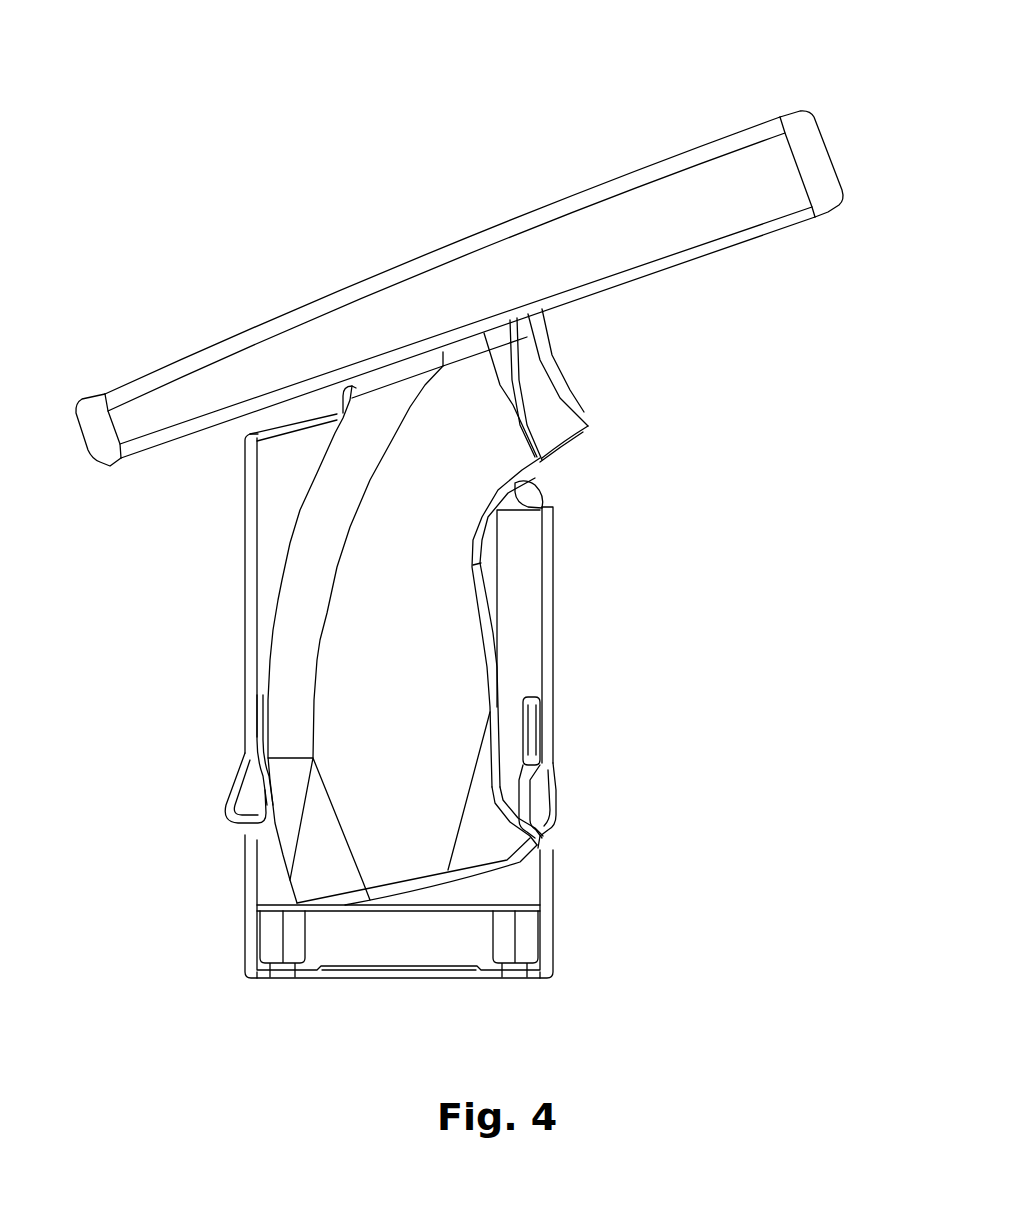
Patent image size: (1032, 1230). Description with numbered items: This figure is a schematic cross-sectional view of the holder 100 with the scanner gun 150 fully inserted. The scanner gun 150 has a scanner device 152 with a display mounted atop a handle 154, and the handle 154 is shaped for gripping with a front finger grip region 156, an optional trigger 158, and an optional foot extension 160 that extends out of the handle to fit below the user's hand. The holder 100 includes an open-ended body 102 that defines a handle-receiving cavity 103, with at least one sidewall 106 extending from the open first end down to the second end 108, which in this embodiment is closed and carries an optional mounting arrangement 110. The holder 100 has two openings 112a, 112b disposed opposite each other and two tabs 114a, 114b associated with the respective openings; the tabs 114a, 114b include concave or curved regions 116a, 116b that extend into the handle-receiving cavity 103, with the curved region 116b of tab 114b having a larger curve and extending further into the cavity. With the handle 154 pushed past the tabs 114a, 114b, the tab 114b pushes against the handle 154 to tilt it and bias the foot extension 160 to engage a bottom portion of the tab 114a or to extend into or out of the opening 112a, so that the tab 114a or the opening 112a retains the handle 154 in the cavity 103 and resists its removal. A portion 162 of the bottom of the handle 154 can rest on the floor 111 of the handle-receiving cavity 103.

The holder 100 is at (354, 660).
The body 102 is at (245, 517).
The handle-receiving cavity 103 is at (390, 660).
The sidewall 106 is at (245, 583).
The second end 108 is at (493, 962).
The mounting arrangement 110 is at (352, 977).
The floor 111 is at (405, 910).
The opening 112a is at (591, 807).
The opening 112b is at (195, 803).
The tab 114a is at (540, 750).
The tab 114b is at (243, 743).
The concave or curved region 116a is at (535, 795).
The concave or curved region 116b is at (258, 803).
The scanner gun 150 is at (490, 242).
The scanner device 152 is at (628, 178).
The handle 154 is at (270, 637).
The front finger grip region 156 is at (488, 580).
The trigger 158 is at (582, 428).
The foot extension 160 is at (545, 833).
The portion of the bottom of the handle 162 is at (310, 902).